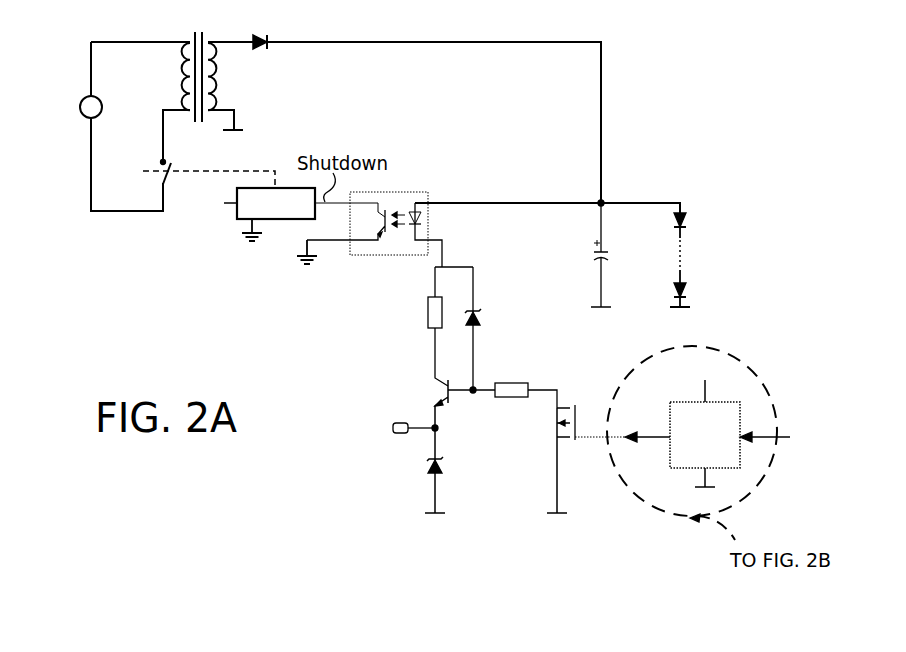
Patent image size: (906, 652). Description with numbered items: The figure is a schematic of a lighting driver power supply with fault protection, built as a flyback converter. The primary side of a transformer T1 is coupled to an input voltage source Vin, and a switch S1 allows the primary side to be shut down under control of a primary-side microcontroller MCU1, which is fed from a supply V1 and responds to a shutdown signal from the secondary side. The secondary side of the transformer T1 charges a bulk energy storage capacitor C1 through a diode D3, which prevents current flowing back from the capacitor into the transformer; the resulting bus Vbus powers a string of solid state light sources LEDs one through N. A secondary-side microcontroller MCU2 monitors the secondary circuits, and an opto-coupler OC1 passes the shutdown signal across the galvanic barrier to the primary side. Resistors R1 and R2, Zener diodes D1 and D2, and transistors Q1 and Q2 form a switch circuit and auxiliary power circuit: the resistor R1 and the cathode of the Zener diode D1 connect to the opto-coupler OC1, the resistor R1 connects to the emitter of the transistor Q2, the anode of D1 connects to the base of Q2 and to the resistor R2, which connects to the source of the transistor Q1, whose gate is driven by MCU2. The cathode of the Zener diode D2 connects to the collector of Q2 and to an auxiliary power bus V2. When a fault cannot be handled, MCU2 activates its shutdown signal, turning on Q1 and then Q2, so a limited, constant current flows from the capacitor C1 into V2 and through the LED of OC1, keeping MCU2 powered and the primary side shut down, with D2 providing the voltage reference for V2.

The input voltage source Vin is at (80, 105).
The transformer T1 is at (199, 69).
The diode D3 is at (266, 29).
The switch S1 is at (205, 180).
The microcontroller MCU1 is at (276, 214).
The supply voltage V1 is at (218, 198).
The opto-coupler OC1 is at (372, 215).
The resistor R1 is at (422, 312).
The Zener diode D1 is at (488, 328).
The transistor Q2 is at (448, 420).
The auxiliary power bus V2 is at (404, 427).
The Zener diode D2 is at (448, 485).
The resistor R2 is at (526, 385).
The transistor Q1 is at (578, 459).
The bulk energy storage capacitor C1 is at (613, 253).
The bus voltage Vbus is at (628, 203).
The string of solid state light sources LEDs is at (727, 260).
The microcontroller MCU2 is at (751, 443).